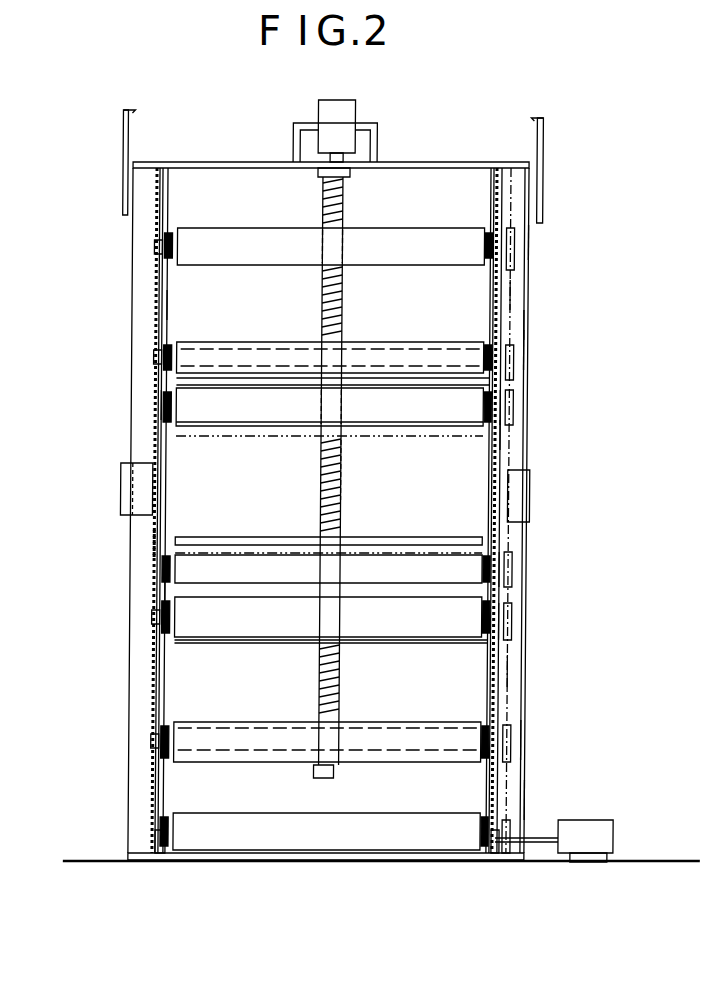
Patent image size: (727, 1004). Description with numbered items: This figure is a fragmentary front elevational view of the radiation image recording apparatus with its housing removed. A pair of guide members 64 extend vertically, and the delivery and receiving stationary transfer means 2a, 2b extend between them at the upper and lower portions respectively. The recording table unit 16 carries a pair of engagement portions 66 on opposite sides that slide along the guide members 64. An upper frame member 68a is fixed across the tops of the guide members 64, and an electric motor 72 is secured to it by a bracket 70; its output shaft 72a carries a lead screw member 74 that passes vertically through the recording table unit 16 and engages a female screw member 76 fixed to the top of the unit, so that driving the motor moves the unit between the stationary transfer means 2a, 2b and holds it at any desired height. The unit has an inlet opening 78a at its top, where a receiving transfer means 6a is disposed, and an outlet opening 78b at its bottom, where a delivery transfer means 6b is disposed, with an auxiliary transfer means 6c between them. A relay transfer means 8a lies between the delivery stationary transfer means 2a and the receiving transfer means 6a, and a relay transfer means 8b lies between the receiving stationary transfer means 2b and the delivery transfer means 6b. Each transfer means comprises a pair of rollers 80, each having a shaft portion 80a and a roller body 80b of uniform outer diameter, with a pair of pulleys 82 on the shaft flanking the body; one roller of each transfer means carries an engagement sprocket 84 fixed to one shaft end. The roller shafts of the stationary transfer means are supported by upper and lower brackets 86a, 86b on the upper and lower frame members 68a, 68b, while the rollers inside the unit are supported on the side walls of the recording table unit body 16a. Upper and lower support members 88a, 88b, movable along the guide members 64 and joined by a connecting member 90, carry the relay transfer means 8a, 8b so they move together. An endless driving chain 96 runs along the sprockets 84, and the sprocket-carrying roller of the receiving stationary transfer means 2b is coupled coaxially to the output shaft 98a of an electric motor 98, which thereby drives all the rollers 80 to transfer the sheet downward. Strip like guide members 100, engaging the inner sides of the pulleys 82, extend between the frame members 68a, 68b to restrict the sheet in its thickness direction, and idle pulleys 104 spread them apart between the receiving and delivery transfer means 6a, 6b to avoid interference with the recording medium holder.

The delivery stationary transfer means 2a is at (532, 243).
The receiving stationary transfer means 2b is at (532, 805).
The receiving transfer means 6a is at (517, 405).
The delivery transfer means 6b is at (517, 615).
The auxiliary transfer means 6c is at (517, 570).
The relay transfer means 8a is at (528, 352).
The relay transfer means 8b is at (530, 740).
The recording table unit 16 is at (157, 537).
The recording table unit body 16a is at (167, 600).
The guide members 64 is at (160, 405).
The engagement portions 66 is at (125, 490).
The upper frame member 68a is at (230, 161).
The lower frame member 68b is at (232, 862).
The bracket 70 is at (378, 146).
The electric motor 72 is at (347, 112).
The output shaft 72a is at (345, 163).
The lead screw member 74 is at (345, 300).
The female screw member 76 is at (352, 390).
The inlet opening 78a is at (178, 408).
The outlet opening 78b is at (178, 640).
The rollers 80 is at (425, 226).
The shaft portion 80a is at (158, 244).
The roller body 80b is at (262, 238).
The pulleys 82 is at (172, 240).
The engagement sprocket 84 is at (517, 255).
The upper bracket 86a is at (160, 193).
The lower bracket 86b is at (160, 840).
The upper support member 88a is at (272, 342).
The lower support member 88b is at (280, 722).
The connecting member 90 is at (346, 458).
The endless driving chain 96 is at (513, 672).
The electric motor 98 is at (600, 820).
The output shaft 98a is at (585, 862).
The strip like guide members 100 is at (166, 300).
The idle pulleys 104 is at (260, 535).